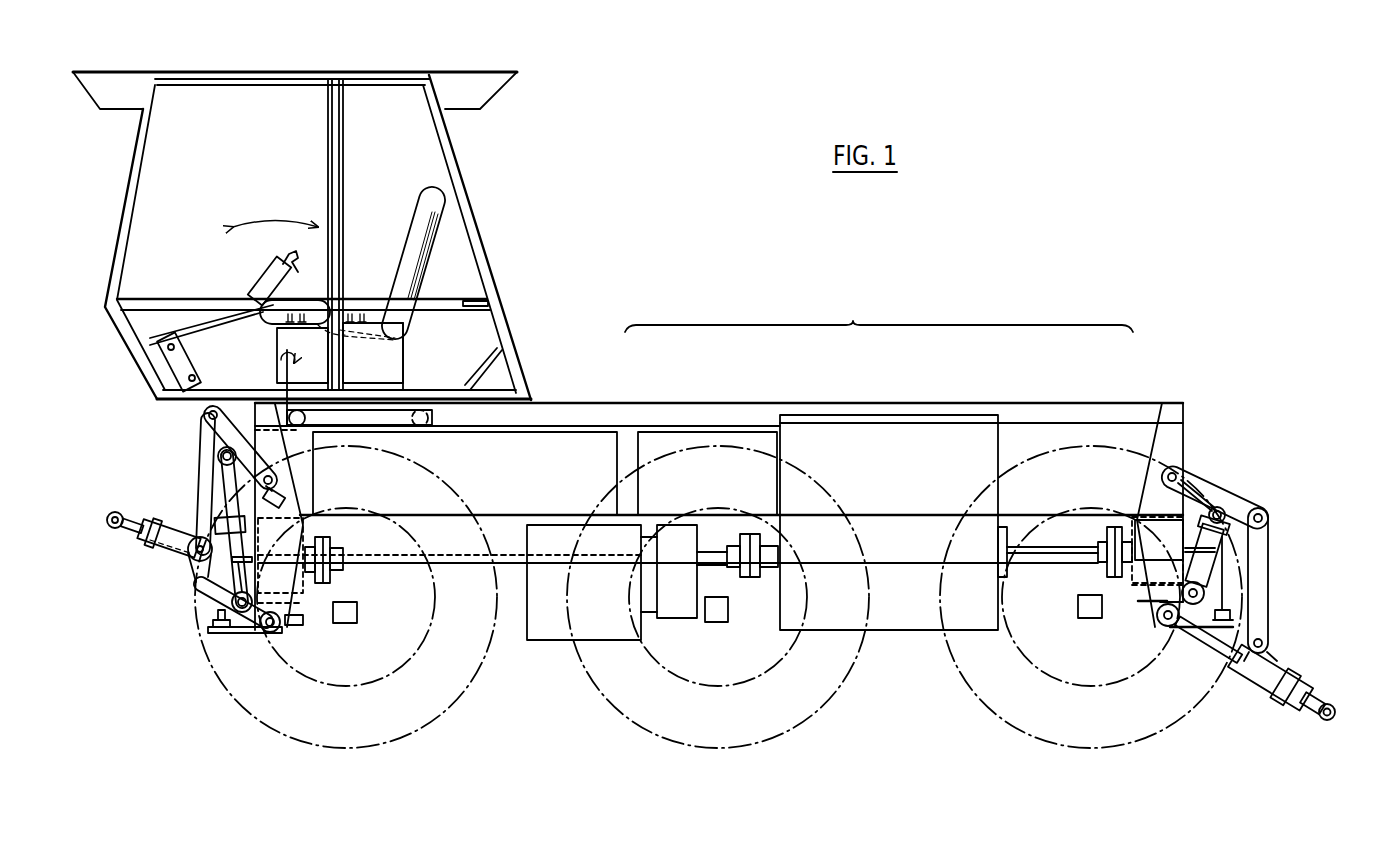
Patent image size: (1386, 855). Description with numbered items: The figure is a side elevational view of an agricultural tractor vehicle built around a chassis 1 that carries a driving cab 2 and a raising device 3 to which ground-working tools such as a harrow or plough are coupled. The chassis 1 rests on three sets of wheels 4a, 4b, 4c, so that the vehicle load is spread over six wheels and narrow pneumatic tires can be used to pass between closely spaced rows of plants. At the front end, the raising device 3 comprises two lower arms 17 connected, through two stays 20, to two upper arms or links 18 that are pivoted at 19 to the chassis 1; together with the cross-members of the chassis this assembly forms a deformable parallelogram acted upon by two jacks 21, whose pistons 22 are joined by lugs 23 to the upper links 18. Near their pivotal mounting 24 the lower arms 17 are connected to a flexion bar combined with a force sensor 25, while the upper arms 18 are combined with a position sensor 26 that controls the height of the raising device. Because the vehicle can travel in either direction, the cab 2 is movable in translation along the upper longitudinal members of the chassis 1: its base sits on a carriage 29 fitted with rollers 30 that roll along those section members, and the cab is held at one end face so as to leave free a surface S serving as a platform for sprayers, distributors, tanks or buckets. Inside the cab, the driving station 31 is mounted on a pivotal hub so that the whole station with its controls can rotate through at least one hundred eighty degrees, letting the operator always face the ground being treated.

The chassis 1 is at (692, 415).
The driving cab 2 is at (512, 300).
The raising device 3 is at (172, 578).
The set of wheels 4a is at (268, 705).
The set of wheels 4b is at (665, 710).
The set of wheels 4c is at (1047, 705).
The lower arm 17 is at (128, 530).
The upper arm 18 is at (208, 419).
The pivot 19 is at (275, 479).
The stay 20 is at (206, 485).
The jack 21 is at (240, 572).
The piston 22 is at (230, 468).
The lug 23 is at (224, 451).
The pivotal mounting 24 is at (240, 630).
The force sensor 25 is at (260, 634).
The position sensor 26 is at (286, 498).
The carriage 29 is at (340, 415).
The roller 30 is at (422, 421).
The driving station 31 is at (408, 370).
The surface S is at (879, 315).